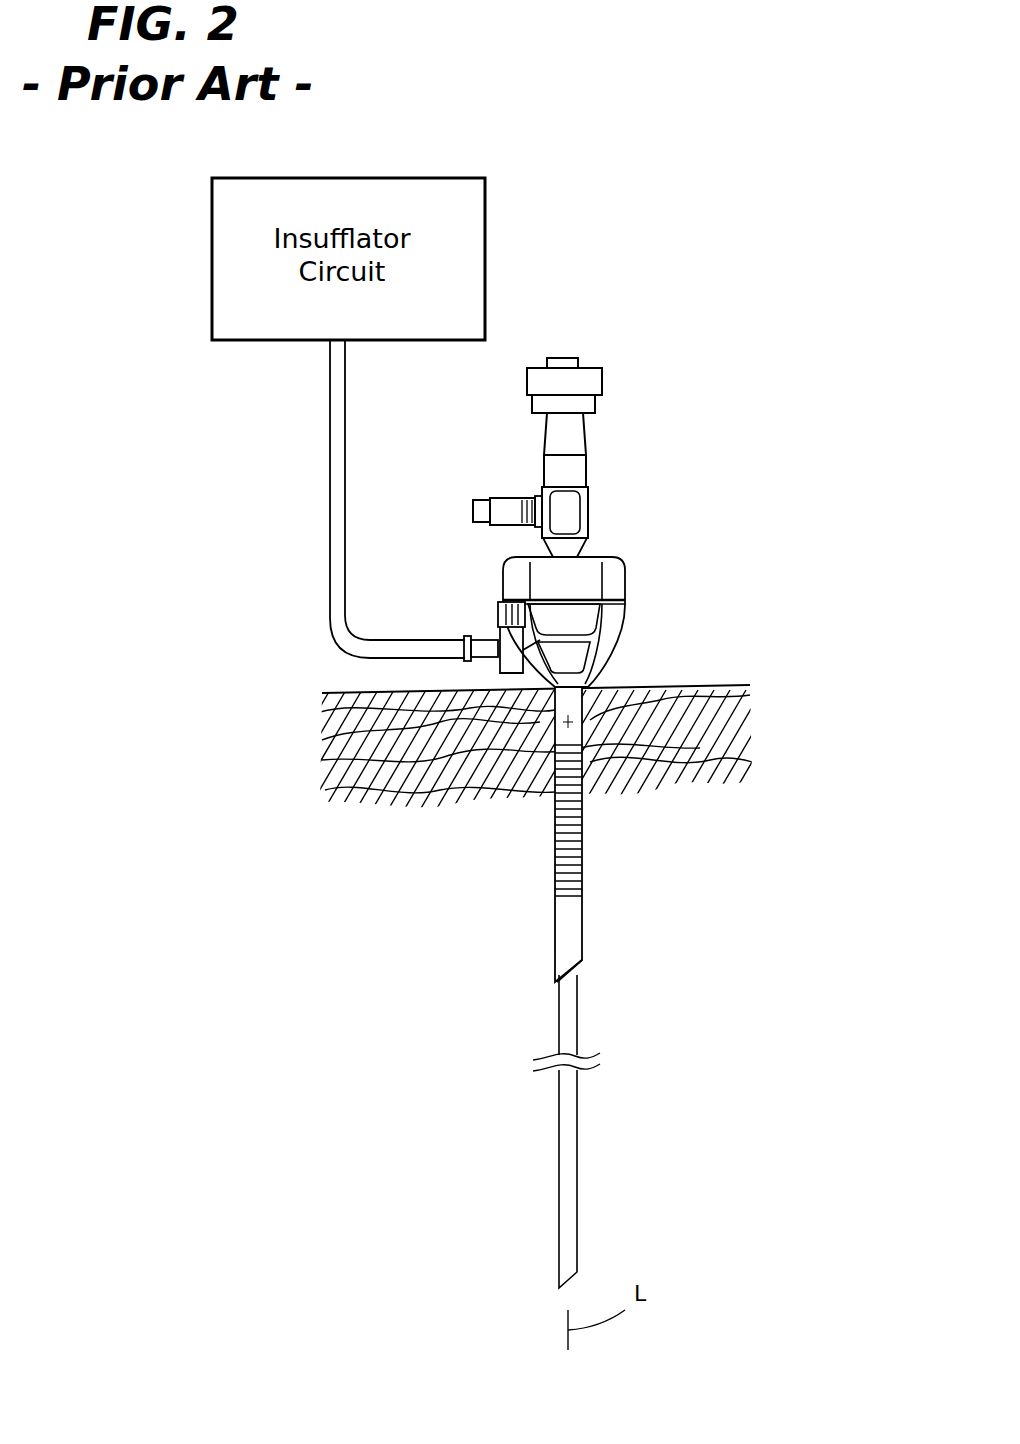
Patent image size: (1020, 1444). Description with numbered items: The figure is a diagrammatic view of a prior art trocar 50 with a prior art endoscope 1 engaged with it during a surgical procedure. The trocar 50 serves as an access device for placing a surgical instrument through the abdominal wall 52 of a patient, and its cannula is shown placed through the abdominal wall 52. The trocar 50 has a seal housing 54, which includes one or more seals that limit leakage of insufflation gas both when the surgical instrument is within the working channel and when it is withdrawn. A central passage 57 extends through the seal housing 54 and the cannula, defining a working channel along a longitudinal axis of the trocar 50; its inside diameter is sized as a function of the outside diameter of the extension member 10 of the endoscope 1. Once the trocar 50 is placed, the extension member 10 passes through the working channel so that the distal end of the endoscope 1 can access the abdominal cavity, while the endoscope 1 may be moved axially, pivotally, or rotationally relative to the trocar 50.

The endoscope 1 is at (594, 452).
The trocar 50 is at (632, 574).
The seal housing 54 is at (617, 626).
The abdominal wall 52 is at (720, 687).
The central passage 57 is at (576, 982).
The extension member 10 is at (567, 1131).